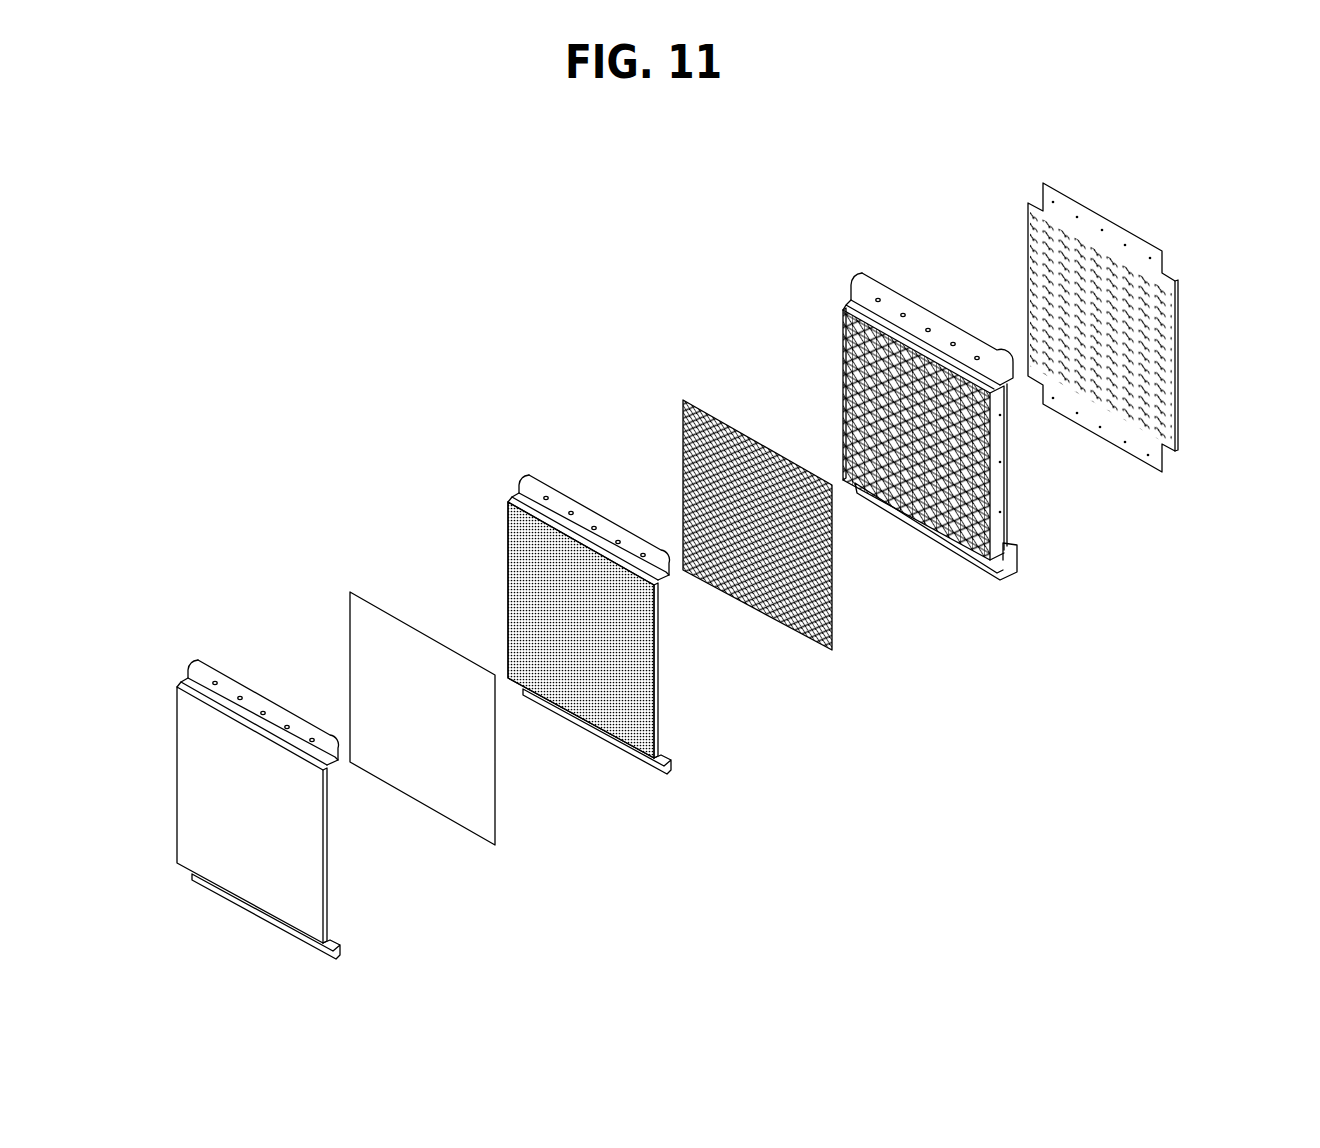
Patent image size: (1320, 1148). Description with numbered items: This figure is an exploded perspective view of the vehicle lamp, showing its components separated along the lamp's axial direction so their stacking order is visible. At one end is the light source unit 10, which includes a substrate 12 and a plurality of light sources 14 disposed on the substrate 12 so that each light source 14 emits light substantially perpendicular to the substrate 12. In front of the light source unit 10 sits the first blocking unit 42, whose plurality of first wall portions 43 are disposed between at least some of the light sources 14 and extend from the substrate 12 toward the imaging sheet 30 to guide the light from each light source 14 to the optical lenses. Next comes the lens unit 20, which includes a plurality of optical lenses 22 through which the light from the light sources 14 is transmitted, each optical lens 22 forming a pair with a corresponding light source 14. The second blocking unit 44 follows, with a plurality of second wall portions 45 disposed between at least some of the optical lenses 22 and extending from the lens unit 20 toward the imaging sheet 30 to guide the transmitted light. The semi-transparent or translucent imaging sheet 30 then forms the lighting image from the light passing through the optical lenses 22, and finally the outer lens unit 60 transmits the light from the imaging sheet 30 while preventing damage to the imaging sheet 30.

The light source unit 10 is at (1129, 308).
The substrate 12 is at (1172, 350).
The light sources 14 is at (1173, 407).
The lens unit 20 is at (783, 502).
The optical lenses 22 is at (833, 603).
The imaging sheet 30 is at (365, 597).
The first blocking unit 42 is at (950, 409).
The first wall portions 43 is at (991, 502).
The second blocking unit 44 is at (609, 603).
The second wall portions 45 is at (656, 702).
The outer lens unit 60 is at (230, 676).